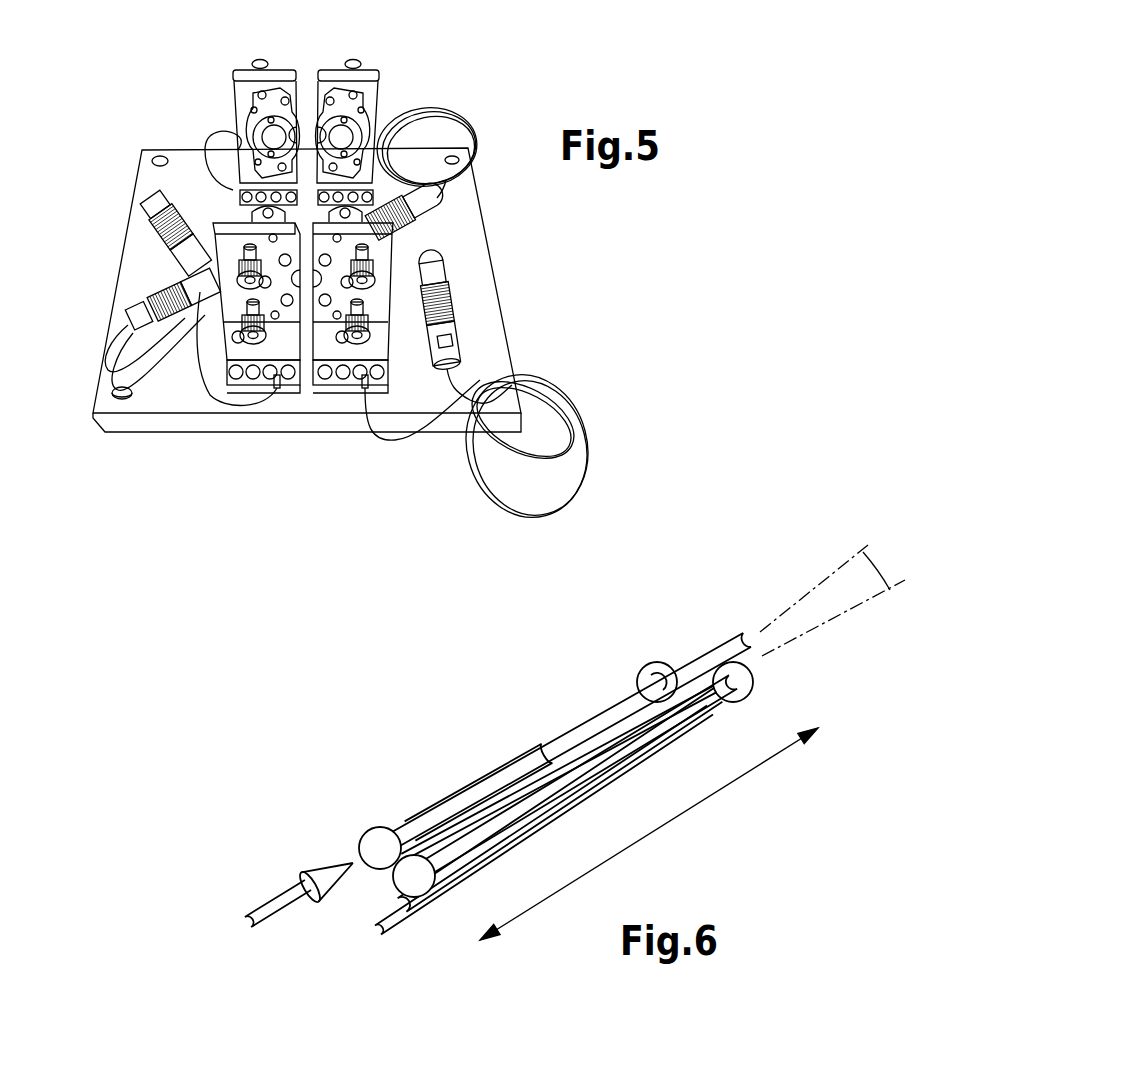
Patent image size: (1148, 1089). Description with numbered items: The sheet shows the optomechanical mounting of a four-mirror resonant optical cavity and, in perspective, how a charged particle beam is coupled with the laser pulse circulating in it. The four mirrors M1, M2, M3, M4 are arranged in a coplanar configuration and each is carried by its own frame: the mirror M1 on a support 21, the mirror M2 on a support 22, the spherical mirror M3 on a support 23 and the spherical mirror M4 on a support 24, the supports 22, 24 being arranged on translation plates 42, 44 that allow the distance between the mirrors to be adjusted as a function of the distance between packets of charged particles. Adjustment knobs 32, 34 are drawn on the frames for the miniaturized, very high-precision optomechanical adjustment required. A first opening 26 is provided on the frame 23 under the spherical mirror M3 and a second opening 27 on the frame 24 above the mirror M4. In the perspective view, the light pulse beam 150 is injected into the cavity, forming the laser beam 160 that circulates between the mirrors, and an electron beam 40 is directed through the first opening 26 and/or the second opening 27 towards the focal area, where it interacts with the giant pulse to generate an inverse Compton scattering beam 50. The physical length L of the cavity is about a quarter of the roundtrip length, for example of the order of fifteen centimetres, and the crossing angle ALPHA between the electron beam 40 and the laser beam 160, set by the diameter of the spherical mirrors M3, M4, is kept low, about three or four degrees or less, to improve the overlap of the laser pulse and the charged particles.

In FIG. 5, the support 21 is at (247, 72).
In FIG. 5, the support 23 is at (367, 76).
In FIG. 5, the support 22 is at (237, 240).
In FIG. 5, the support 24 is at (380, 238).
In FIG. 5, the first opening 26 is at (318, 136).
In FIG. 5, the second opening 27 is at (318, 283).
In FIG. 5, the adjustment knobs of first lower module 32 is at (247, 322).
In FIG. 5, the adjustment knobs of second lower module 34 is at (367, 267).
In FIG. 5, the translation plate 42 is at (243, 380).
In FIG. 5, the translation plate 44 is at (347, 380).
In FIG. 6, the electron beam 40 is at (723, 650).
In FIG. 6, the inverse Compton scattering beam 50 is at (387, 927).
In FIG. 6, the light pulse beam 150 is at (278, 907).
In FIG. 6, the laser beam 160 is at (533, 757).
In FIG. 6, the mirror M1 is at (382, 840).
In FIG. 6, the mirror M2 is at (657, 680).
In FIG. 6, the spherical mirror M3 is at (400, 876).
In FIG. 6, the spherical mirror M4 is at (747, 680).
In FIG. 6, the physical length of the resonant optical cavity L is at (649, 834).
In FIG. 6, the crossing angle ALPHA is at (882, 572).